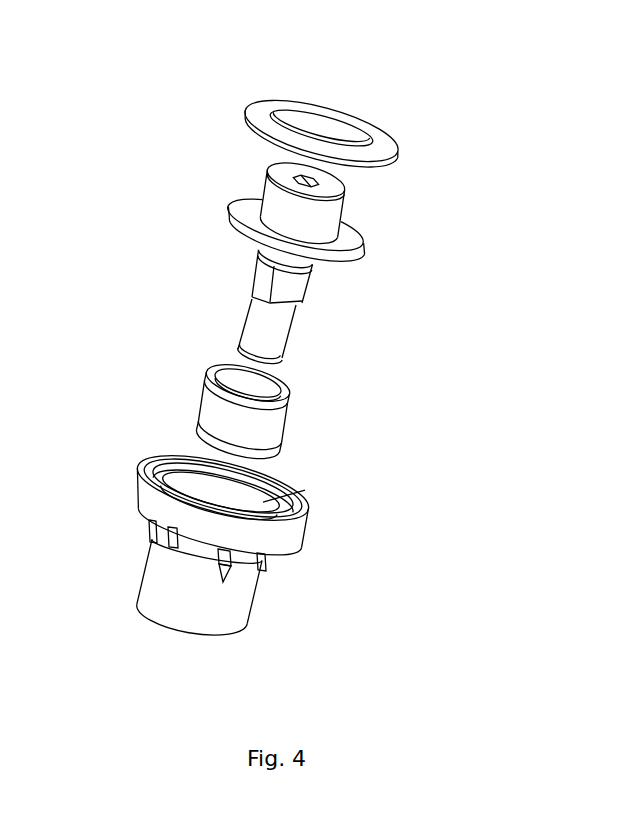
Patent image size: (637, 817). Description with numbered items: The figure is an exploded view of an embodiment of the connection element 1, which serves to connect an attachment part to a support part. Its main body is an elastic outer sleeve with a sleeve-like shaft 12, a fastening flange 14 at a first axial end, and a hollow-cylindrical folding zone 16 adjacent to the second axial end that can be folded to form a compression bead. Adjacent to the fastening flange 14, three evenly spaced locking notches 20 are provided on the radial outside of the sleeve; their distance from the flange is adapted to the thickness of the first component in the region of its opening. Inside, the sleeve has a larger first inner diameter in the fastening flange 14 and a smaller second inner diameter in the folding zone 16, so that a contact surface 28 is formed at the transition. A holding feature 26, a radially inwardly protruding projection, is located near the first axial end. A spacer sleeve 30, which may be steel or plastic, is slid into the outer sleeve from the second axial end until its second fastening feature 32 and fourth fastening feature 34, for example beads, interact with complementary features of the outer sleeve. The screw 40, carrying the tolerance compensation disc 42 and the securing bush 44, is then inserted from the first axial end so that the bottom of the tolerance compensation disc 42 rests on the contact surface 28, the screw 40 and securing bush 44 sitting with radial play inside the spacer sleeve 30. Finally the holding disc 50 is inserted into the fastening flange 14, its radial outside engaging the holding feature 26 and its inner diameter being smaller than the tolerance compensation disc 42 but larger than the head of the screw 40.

The connection element 1 is at (610, 53).
The sleeve-like shaft 12 is at (184, 590).
The fastening flange 14 is at (247, 483).
The hollow-cylindrical folding zone 16 is at (225, 612).
The locking notches 20 is at (150, 530).
The holding feature 26 is at (180, 458).
The contact surface 28 is at (180, 490).
The spacer sleeve 30 is at (245, 438).
The second fastening feature 32 is at (198, 422).
The fourth fastening feature 34 is at (290, 406).
The screw 40 is at (283, 303).
The tolerance compensation disc 42 is at (366, 250).
The securing bush 44 is at (255, 267).
The holding disc 50 is at (387, 140).